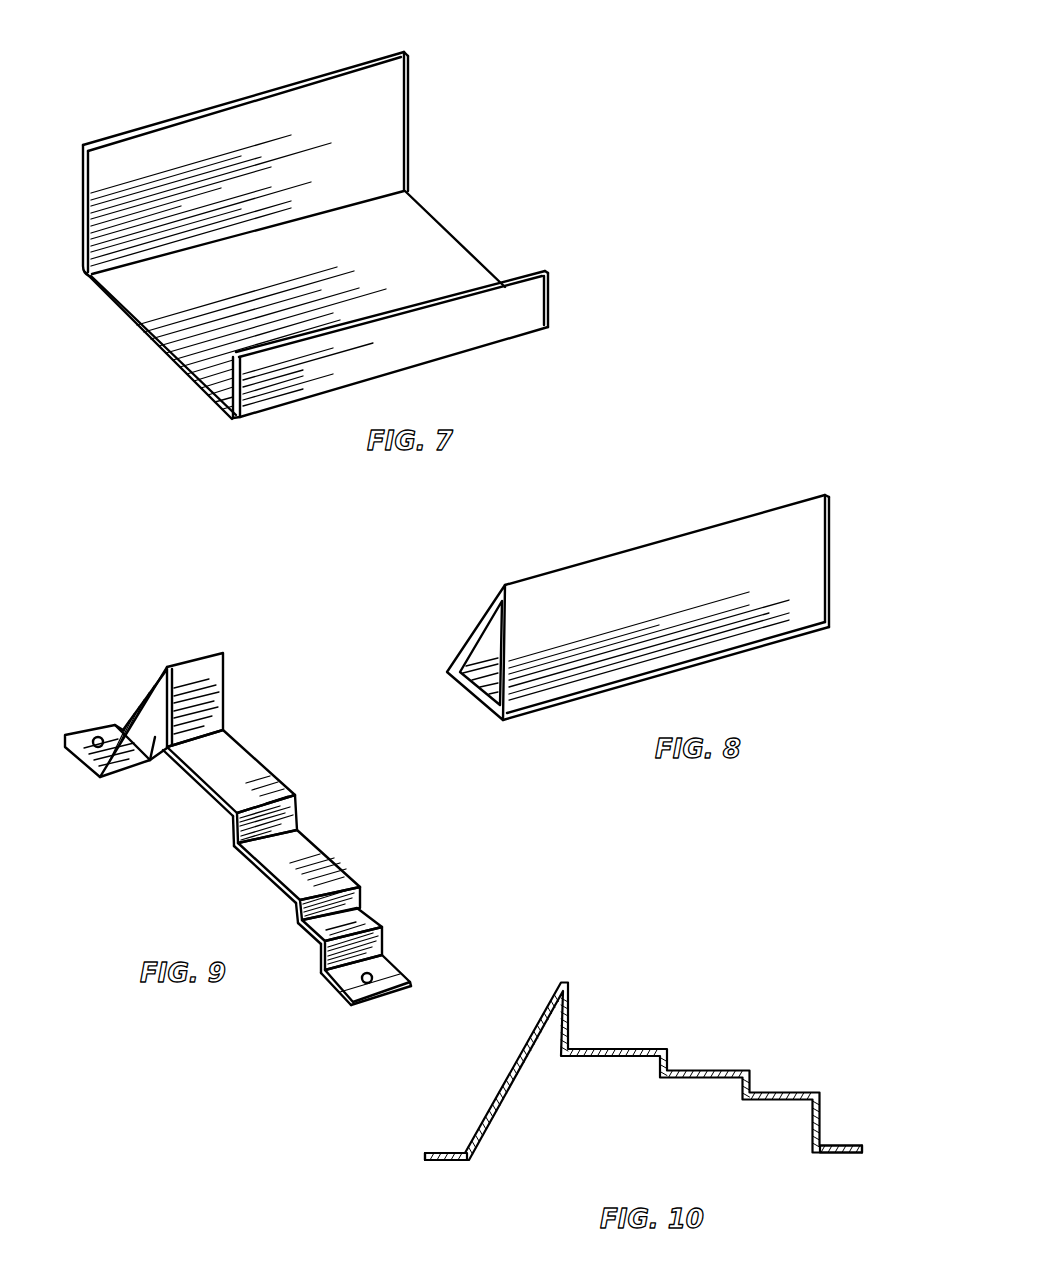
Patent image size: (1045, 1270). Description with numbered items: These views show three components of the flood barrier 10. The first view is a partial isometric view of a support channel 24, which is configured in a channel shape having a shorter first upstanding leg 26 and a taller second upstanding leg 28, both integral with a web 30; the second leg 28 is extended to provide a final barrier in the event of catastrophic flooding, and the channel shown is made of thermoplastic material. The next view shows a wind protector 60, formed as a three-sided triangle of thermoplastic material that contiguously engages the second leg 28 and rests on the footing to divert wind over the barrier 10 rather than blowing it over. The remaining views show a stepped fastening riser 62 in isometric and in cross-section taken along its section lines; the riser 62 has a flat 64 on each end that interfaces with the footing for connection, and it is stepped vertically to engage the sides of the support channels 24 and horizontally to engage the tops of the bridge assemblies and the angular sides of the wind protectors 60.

In FIG. 9, the barrier 10 is at (290, 824).
In FIG. 7, the support channel 24 is at (346, 223).
In FIG. 7, the first upstanding leg 26 is at (473, 343).
In FIG. 7, the second upstanding leg 28 is at (228, 102).
In FIG. 7, the web 30 is at (172, 362).
In FIG. 8, the wind protector 60 is at (677, 537).
In FIG. 9, the stepped fastening riser 62 is at (288, 792).
In FIG. 10, the stepped fastening riser 62 is at (661, 1046).
In FIG. 9, the flat 64 is at (83, 767).
In FIG. 10, the flat 64 is at (433, 1162).